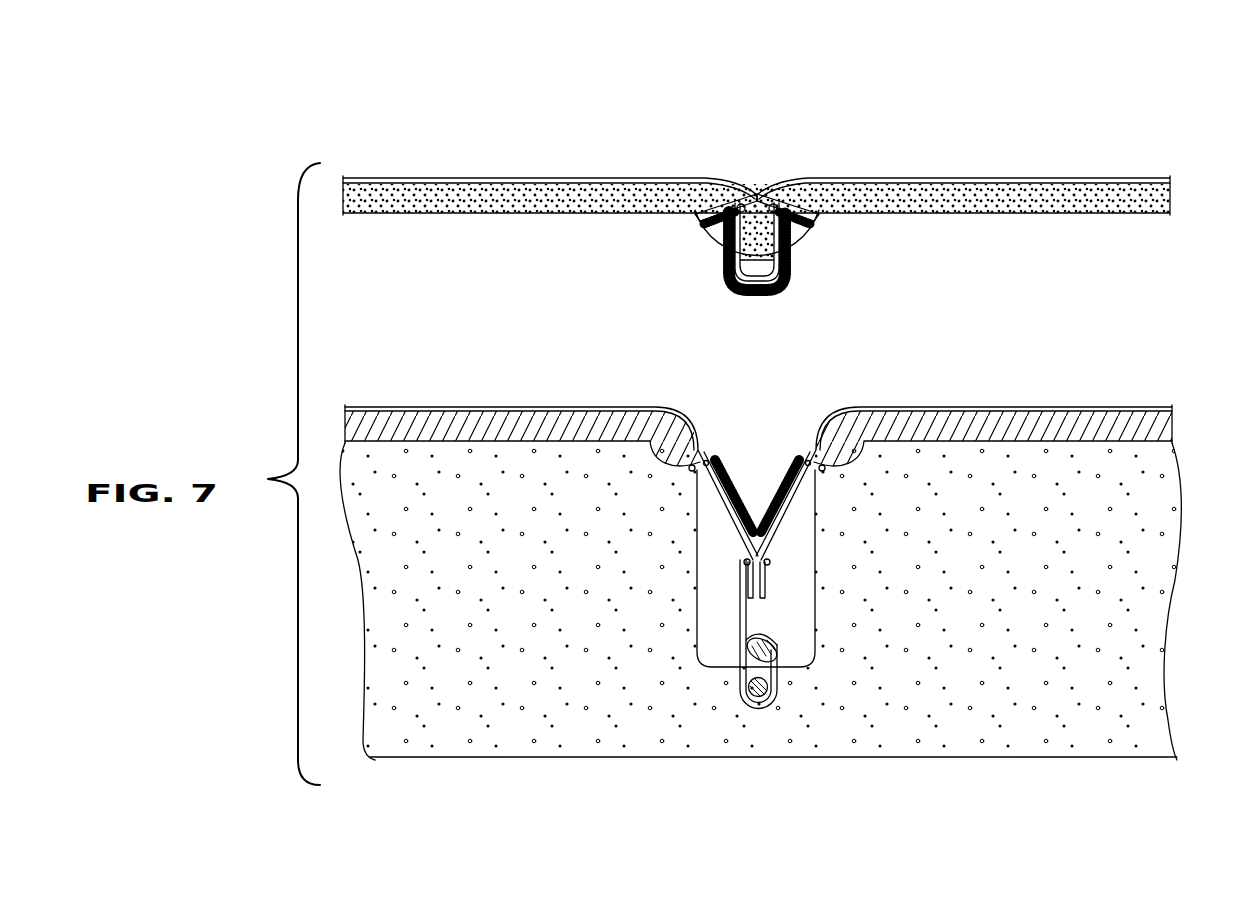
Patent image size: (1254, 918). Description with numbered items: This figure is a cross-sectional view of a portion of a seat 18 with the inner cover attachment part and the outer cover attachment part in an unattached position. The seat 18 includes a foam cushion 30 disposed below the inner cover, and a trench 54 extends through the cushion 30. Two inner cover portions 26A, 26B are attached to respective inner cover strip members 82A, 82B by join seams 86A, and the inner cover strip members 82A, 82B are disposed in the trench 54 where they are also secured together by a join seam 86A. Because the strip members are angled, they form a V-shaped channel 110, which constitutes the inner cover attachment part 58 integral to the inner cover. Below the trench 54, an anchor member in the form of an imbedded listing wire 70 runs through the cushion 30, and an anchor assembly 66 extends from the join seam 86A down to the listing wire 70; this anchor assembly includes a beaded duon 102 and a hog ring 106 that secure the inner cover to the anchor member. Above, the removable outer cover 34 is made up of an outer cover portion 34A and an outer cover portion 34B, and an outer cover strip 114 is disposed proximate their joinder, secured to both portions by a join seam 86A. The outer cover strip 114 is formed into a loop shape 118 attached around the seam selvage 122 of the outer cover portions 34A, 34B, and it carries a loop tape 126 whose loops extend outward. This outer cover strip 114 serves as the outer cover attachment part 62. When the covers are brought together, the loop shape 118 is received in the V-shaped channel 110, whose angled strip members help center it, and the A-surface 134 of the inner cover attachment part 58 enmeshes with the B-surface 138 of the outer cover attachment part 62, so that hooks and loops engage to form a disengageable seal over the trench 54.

The seat 18 is at (1123, 562).
The inner cover portion 26A is at (513, 412).
The inner cover portion 26B is at (995, 410).
The cushion 30 is at (1080, 627).
The outer cover 34 is at (452, 193).
The outer cover portion 34A is at (383, 197).
The outer cover portion 34B is at (950, 200).
The trench 54 is at (748, 612).
The inner cover attachment part 58 is at (778, 470).
The outer cover attachment part 62 is at (797, 273).
The anchor assembly 66 is at (748, 612).
The listing wire 70 is at (758, 695).
The inner cover strip member 82A is at (730, 478).
The inner cover strip member 82B is at (795, 458).
The join seam 86A is at (782, 183).
The beaded duon 102 is at (740, 590).
The hog ring 106 is at (740, 673).
The V-shaped channel 110 is at (780, 522).
The outer cover strip 114 is at (829, 205).
The loop shape 118 is at (688, 207).
The seam selvage 122 is at (727, 190).
The loop tape 126 is at (720, 267).
The A-surface 134 is at (833, 363).
The B-surface 138 is at (884, 316).